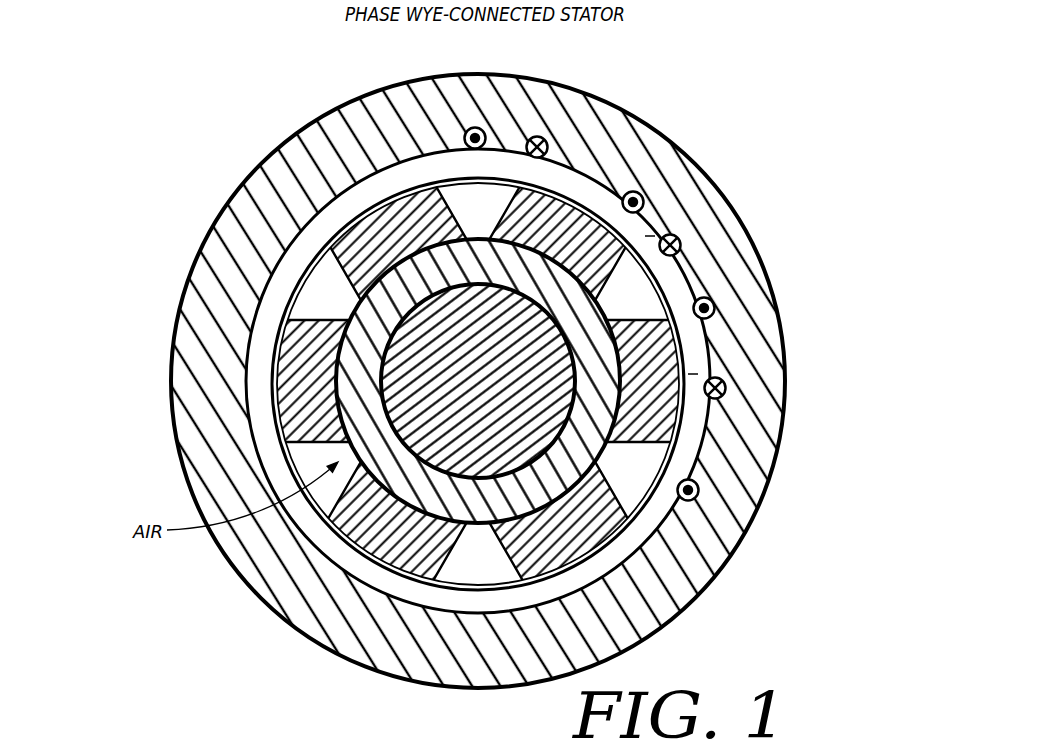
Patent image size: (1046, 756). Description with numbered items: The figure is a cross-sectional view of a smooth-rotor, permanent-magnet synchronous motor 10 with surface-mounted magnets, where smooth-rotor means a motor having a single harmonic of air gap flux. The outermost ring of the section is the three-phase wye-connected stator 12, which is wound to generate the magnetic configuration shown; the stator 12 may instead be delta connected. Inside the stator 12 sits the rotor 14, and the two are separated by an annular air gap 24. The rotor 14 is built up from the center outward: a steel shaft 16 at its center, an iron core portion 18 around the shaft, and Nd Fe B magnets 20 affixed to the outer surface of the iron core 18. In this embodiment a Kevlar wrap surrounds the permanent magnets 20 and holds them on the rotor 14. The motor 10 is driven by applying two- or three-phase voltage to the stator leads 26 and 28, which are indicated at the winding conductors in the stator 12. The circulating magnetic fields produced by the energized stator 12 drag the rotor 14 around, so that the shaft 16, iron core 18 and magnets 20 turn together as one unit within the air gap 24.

The motor 10 is at (813, 168).
The three-phase wye-connected stator 12 is at (257, 222).
The rotor 14 is at (287, 290).
The steel shaft 16 is at (524, 380).
The iron core portion 18 is at (345, 165).
The Nd Fe B magnets 20 is at (812, 256).
The air gap 24 is at (693, 342).
The lead 26 is at (476, 133).
The lead 28 is at (663, 237).